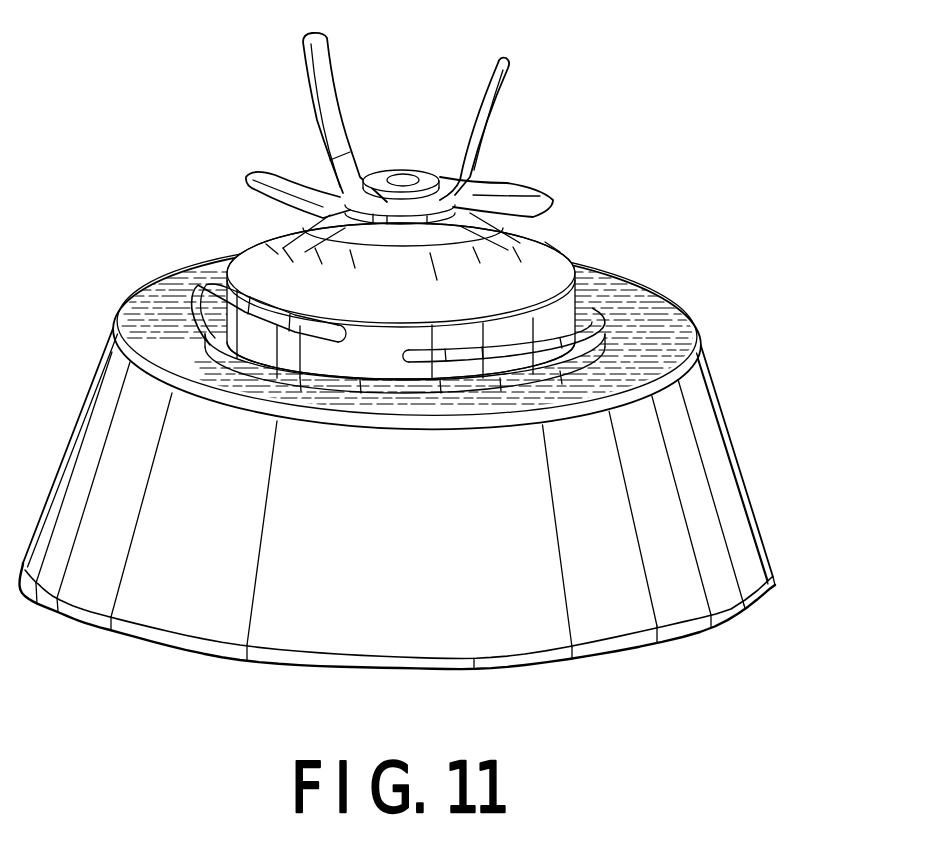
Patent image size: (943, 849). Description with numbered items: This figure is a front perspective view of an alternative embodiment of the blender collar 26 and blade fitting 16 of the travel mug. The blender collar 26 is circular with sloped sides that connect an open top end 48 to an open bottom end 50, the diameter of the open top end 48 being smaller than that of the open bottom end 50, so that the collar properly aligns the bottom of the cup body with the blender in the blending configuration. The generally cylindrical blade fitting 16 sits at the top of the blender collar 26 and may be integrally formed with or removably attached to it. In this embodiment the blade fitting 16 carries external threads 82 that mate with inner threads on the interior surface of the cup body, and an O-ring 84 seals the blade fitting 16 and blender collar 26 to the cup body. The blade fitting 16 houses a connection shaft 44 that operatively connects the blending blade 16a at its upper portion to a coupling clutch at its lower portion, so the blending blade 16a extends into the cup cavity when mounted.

The blade fitting 16 is at (577, 272).
The blending blade 16a is at (507, 67).
The blender collar 26 is at (705, 494).
The connection shaft 44 is at (402, 177).
The open top end 48 is at (213, 292).
The open bottom end 50 is at (525, 668).
The external threads 82 is at (207, 275).
The O-ring 84 is at (655, 333).